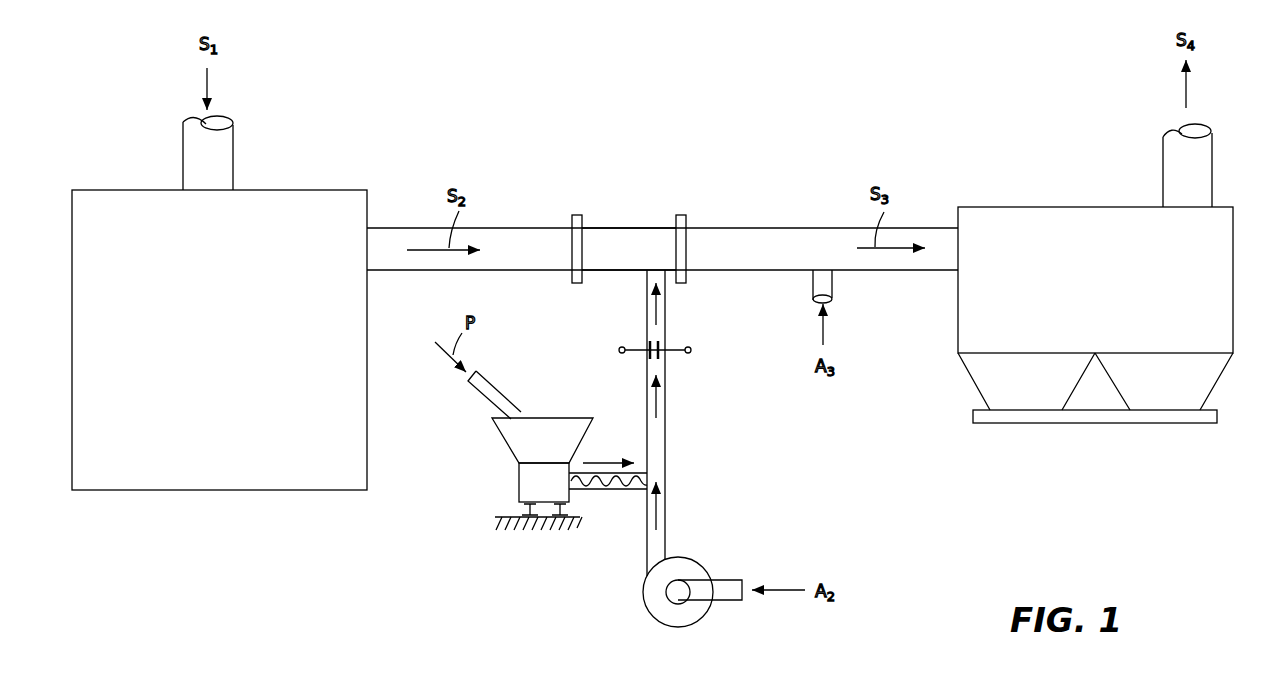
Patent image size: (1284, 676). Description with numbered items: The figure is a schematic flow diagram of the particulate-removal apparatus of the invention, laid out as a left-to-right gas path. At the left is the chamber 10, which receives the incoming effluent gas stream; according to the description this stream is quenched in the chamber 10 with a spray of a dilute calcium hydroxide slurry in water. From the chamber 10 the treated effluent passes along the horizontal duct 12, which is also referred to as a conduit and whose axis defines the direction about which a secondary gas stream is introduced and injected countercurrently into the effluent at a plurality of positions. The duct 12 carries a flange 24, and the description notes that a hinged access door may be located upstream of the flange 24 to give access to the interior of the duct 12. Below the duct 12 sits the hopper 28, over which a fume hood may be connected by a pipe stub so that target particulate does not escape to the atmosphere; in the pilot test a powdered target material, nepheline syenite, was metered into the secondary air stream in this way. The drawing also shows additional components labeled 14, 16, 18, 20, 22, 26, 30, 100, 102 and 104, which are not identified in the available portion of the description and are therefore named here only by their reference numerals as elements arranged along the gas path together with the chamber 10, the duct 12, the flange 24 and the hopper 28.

The chamber 10 is at (314, 191).
The duct 12 is at (752, 228).
The collector 14 is at (1233, 295).
The outlet stack 16 is at (1207, 181).
The riser conduit 18 is at (667, 461).
The blower 20 is at (697, 608).
The duct section 22 is at (627, 228).
The flange 24 is at (572, 222).
The flange 26 is at (688, 278).
The hopper 28 is at (497, 430).
The screw feeder 30 is at (609, 494).
The air inlet 100 is at (834, 284).
The valve 102 is at (661, 356).
The valve handle 104 is at (647, 357).